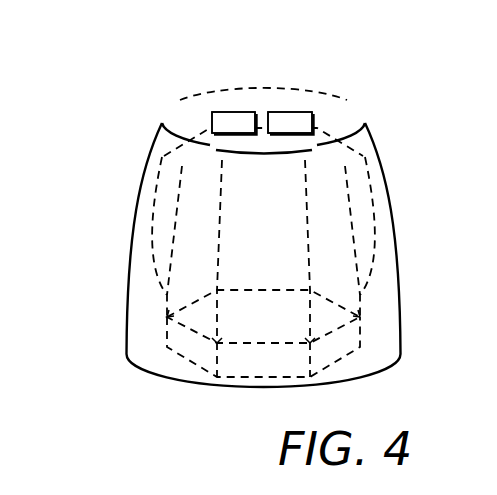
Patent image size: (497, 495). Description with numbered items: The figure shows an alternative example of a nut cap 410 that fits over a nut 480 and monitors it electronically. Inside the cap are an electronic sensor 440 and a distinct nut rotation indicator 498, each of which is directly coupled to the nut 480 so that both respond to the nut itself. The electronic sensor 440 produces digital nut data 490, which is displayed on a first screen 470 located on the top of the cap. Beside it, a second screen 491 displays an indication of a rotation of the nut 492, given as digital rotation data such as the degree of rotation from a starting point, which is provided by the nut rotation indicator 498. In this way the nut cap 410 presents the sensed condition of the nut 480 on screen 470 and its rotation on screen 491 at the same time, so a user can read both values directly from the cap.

The nut cap 410 is at (127, 273).
The electronic sensor 440 is at (213, 136).
The screen 470 is at (237, 111).
The nut 480 is at (163, 330).
The digital nut data 490 is at (216, 124).
The screen 491 is at (295, 111).
The indication of a rotation of a nut 492 is at (305, 125).
The nut rotation indicator 498 is at (313, 136).